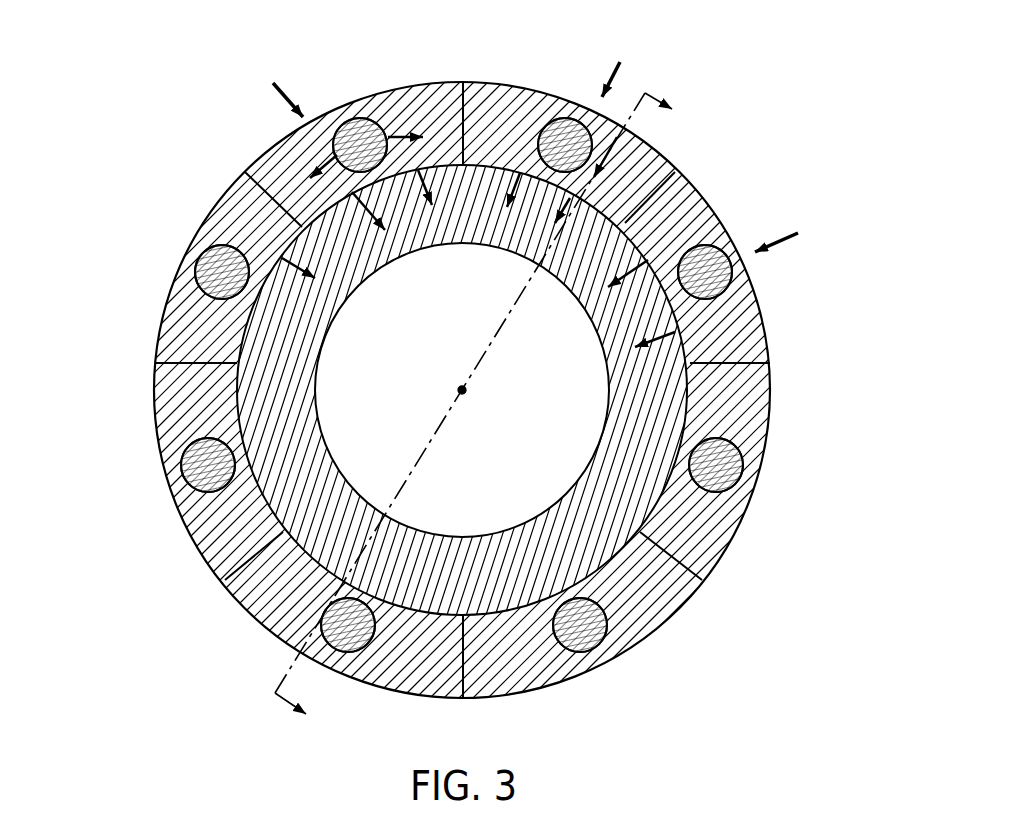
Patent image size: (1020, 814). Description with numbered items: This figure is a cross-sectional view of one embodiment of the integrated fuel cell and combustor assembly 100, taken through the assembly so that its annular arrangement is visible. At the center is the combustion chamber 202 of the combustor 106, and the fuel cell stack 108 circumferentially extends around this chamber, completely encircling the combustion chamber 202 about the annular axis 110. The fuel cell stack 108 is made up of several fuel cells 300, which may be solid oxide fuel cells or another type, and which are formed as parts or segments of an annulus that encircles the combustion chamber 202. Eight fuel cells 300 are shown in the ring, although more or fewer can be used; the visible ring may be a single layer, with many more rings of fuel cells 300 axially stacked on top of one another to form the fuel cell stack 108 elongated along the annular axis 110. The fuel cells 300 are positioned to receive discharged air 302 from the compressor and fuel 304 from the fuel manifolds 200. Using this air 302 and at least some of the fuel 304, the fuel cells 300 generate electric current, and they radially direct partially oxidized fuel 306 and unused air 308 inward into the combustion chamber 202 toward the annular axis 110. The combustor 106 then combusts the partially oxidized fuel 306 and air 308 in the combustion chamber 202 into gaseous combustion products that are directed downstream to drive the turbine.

The integrated fuel cell and combustor assembly 100 is at (461, 368).
The combustor 106 is at (283, 377).
The fuel cell stack 108 is at (670, 646).
The annular axis 110 is at (464, 396).
The fuel manifold 200 is at (180, 464).
The combustion chamber 202 is at (572, 385).
The fuel cell 300 is at (746, 607).
The discharged air 302 is at (295, 102).
The fuel 304 is at (392, 134).
The partially oxidized fuel 306 is at (413, 207).
The unused air 308 is at (358, 198).